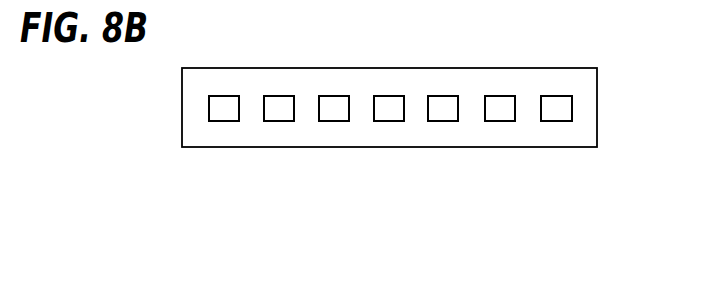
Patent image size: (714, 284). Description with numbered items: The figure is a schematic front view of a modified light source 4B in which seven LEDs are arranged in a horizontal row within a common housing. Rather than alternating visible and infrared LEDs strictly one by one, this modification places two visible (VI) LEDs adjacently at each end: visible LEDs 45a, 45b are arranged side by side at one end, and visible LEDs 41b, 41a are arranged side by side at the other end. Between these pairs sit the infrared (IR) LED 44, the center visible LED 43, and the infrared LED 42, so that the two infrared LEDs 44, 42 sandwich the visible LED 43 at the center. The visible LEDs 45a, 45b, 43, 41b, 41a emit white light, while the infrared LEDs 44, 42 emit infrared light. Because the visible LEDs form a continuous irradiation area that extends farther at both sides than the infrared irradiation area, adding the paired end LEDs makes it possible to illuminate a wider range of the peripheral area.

The light source 4B is at (541, 68).
The visible LED 45a is at (227, 117).
The visible LED 45b is at (283, 117).
The infrared LED 44 is at (340, 117).
The visible LED 43 is at (395, 117).
The infrared LED 42 is at (443, 117).
The visible LED 41b is at (507, 117).
The visible LED 41a is at (563, 117).